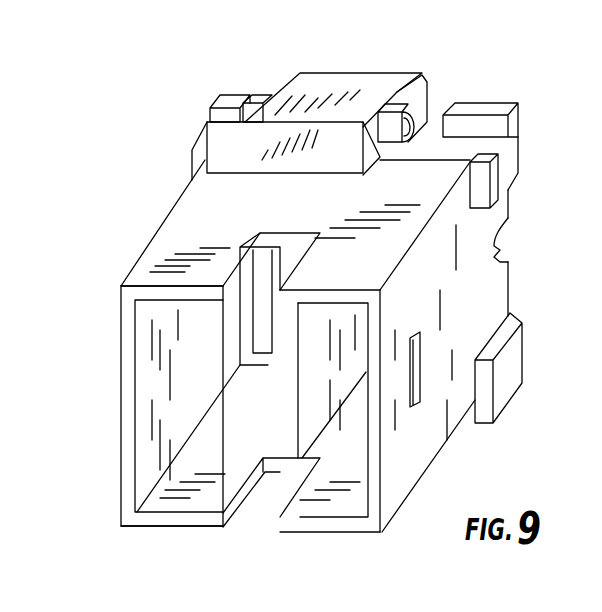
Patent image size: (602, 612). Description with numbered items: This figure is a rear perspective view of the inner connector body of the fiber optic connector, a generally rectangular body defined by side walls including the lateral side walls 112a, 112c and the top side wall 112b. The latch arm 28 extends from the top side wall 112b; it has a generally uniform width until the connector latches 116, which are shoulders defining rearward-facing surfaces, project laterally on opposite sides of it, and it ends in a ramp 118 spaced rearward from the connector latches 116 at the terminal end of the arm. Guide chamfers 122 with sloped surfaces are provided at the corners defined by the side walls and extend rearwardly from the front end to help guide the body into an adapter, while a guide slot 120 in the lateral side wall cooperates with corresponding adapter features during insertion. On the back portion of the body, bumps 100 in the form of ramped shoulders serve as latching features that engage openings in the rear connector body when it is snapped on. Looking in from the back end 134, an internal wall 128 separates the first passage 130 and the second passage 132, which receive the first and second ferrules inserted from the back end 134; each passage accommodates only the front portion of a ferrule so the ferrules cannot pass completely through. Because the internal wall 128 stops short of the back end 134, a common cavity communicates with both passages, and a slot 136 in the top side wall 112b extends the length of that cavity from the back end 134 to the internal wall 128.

The latch arm 28 is at (330, 73).
The bumps 100 is at (422, 382).
The lateral side wall 112a is at (393, 493).
The top side wall 112b is at (172, 235).
The lateral side wall 112c is at (118, 410).
The connector latches 116 is at (262, 103).
The ramp 118 is at (350, 123).
The guide slot 120 is at (502, 238).
The guide chamfers 122 is at (213, 103).
The internal wall 128 is at (277, 412).
The first passage 130 is at (355, 404).
The second passage 132 is at (208, 326).
The back end 134 is at (157, 293).
The slot 136 is at (257, 242).